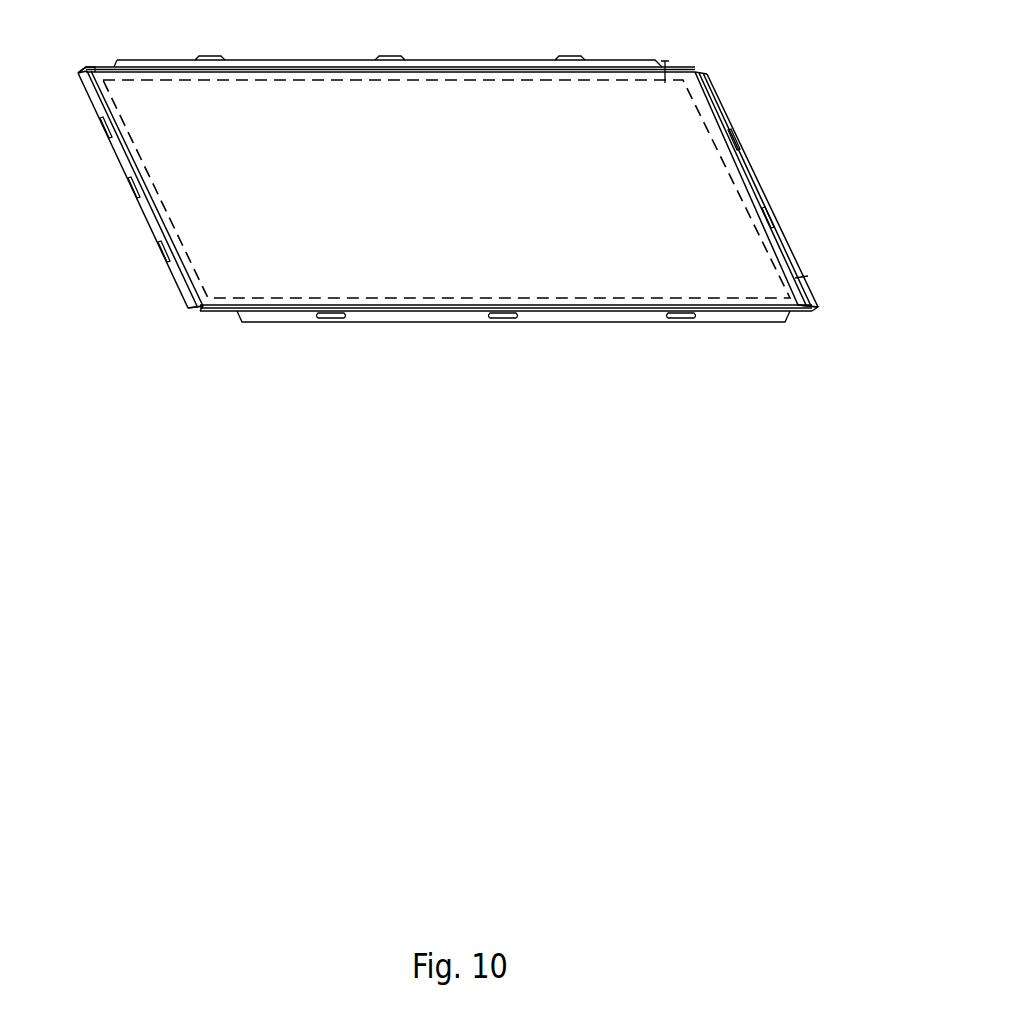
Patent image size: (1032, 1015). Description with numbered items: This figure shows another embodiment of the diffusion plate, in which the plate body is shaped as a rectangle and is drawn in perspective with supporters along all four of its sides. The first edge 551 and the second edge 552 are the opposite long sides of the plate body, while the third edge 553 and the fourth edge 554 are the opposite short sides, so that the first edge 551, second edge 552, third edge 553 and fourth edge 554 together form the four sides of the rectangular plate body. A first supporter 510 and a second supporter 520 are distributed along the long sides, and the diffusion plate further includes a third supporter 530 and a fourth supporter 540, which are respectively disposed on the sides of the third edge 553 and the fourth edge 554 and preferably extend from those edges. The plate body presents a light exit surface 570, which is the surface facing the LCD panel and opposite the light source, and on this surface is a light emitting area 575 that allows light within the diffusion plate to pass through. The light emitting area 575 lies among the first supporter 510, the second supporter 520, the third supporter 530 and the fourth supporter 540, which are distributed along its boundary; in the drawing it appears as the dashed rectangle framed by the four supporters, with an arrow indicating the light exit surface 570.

The first supporter 510 is at (335, 70).
The second supporter 520 is at (441, 311).
The third supporter 530 is at (103, 112).
The fourth supporter 540 is at (713, 105).
The first edge 551 is at (111, 58).
The second edge 552 is at (808, 322).
The third edge 553 is at (147, 266).
The fourth edge 554 is at (828, 287).
The light exit surface 570 is at (167, 185).
The light emitting area 575 is at (666, 64).